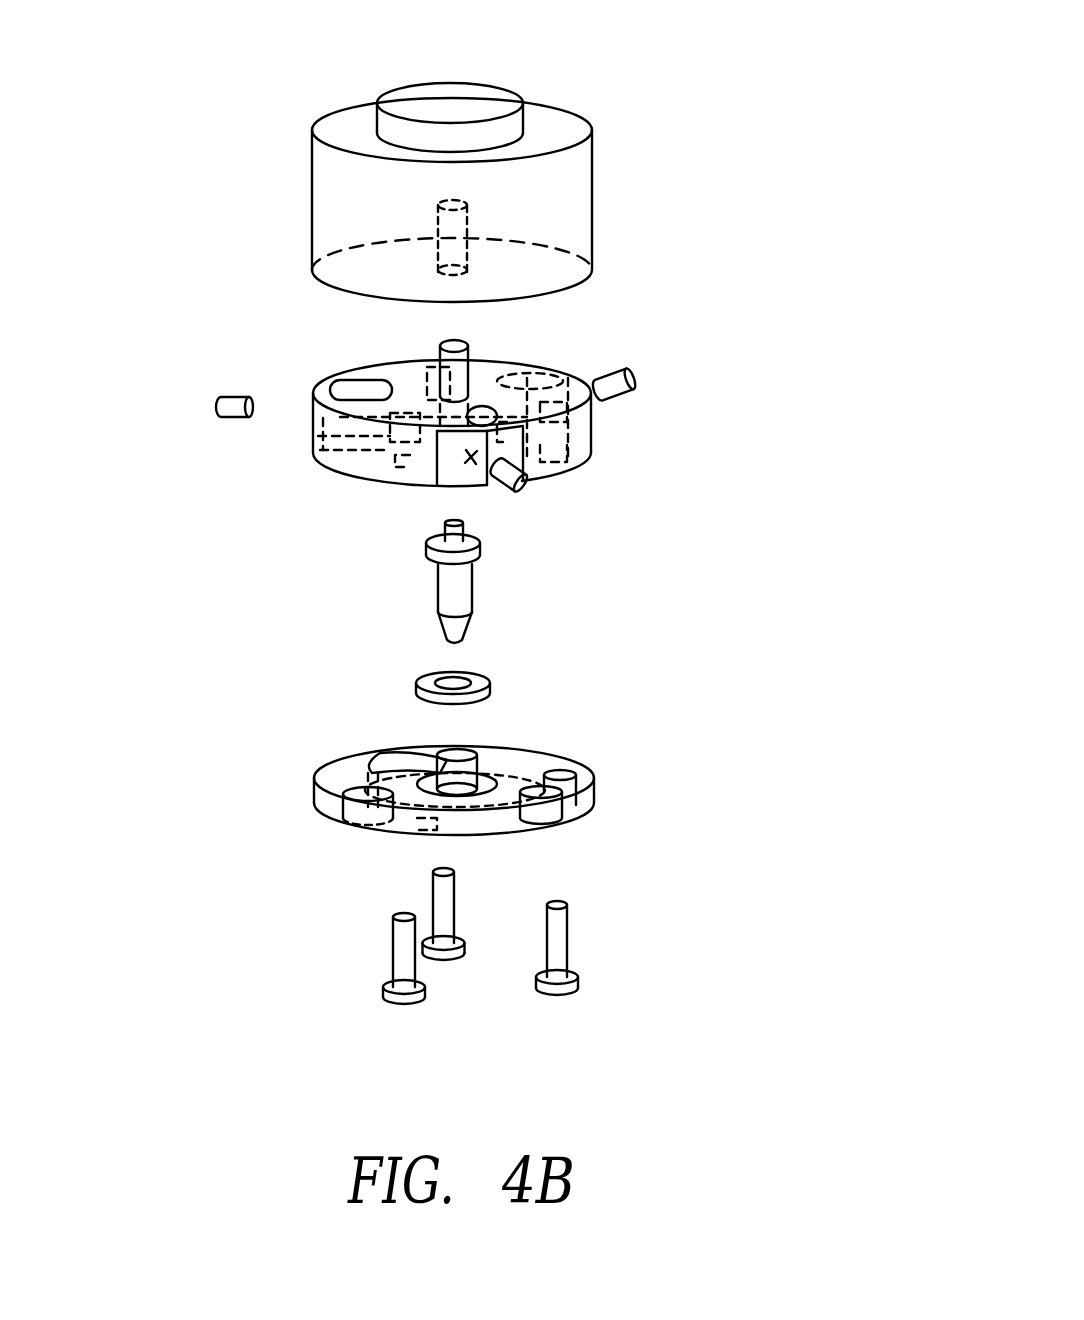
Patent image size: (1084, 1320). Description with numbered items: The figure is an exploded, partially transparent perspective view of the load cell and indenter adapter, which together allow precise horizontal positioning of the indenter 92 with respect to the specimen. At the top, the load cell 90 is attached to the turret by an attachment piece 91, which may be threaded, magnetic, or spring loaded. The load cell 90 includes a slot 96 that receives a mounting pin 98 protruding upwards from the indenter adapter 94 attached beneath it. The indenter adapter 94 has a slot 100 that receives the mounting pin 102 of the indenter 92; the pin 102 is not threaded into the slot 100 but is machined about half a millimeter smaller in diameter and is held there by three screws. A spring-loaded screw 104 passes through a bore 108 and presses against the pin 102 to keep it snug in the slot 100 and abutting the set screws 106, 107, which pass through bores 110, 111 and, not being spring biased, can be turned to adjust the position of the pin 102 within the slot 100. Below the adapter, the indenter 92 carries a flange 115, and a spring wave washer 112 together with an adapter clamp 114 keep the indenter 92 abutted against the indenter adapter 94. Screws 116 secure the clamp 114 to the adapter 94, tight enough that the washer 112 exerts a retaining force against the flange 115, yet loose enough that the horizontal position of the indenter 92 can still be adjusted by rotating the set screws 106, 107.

The load cell 90 is at (596, 213).
The attachment piece 91 is at (448, 97).
The slot 96 is at (448, 227).
The indenter adapter 94 is at (378, 442).
The mounting pin 98 is at (440, 370).
The bore 108 is at (425, 425).
The bore 110 is at (494, 408).
The slot 100 is at (450, 445).
The bore 111 is at (475, 455).
The screw 104 is at (211, 396).
The set screw 106 is at (642, 398).
The set screw 107 is at (535, 483).
The indenter 92 is at (552, 573).
The mounting pin 102 is at (465, 524).
The flange 115 is at (481, 548).
The spring wave washer 112 is at (413, 680).
The adapter clamp 114 is at (598, 779).
The screws 116 is at (386, 947).